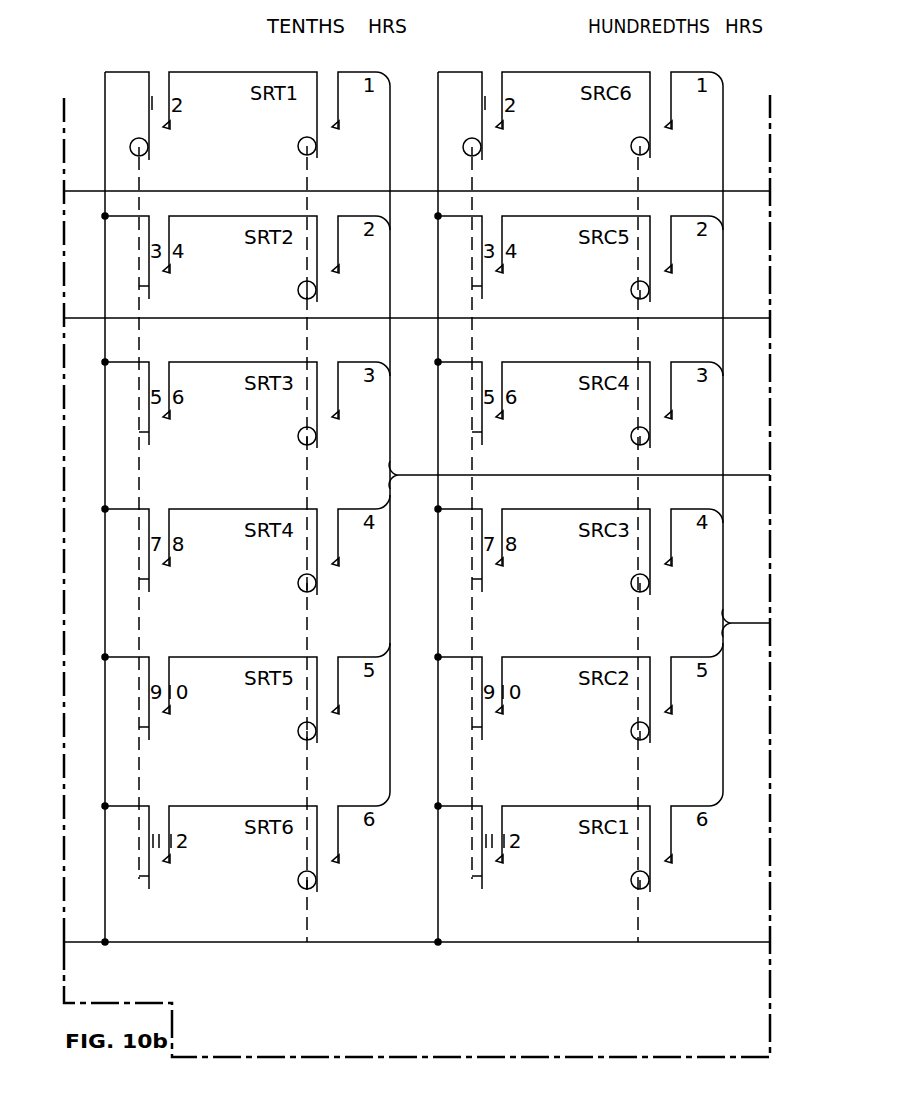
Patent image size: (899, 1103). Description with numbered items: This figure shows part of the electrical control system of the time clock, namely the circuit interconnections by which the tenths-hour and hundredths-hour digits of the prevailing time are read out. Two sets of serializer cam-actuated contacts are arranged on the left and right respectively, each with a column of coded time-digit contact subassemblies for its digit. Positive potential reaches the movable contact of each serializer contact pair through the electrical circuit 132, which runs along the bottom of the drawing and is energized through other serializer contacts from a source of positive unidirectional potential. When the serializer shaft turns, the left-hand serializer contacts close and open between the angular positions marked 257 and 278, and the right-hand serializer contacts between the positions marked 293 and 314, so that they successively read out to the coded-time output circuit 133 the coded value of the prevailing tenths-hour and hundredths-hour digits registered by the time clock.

The electrical circuit 132 is at (84, 943).
The coded-time output circuit 133 is at (211, 190).
The stepping switch SS8 angular position 257 is at (132, 120).
The stepping switch SS8 angular position 278 is at (127, 139).
The stepping switch SS9 angular position 293 is at (465, 120).
The stepping switch SS9 angular position 314 is at (460, 139).